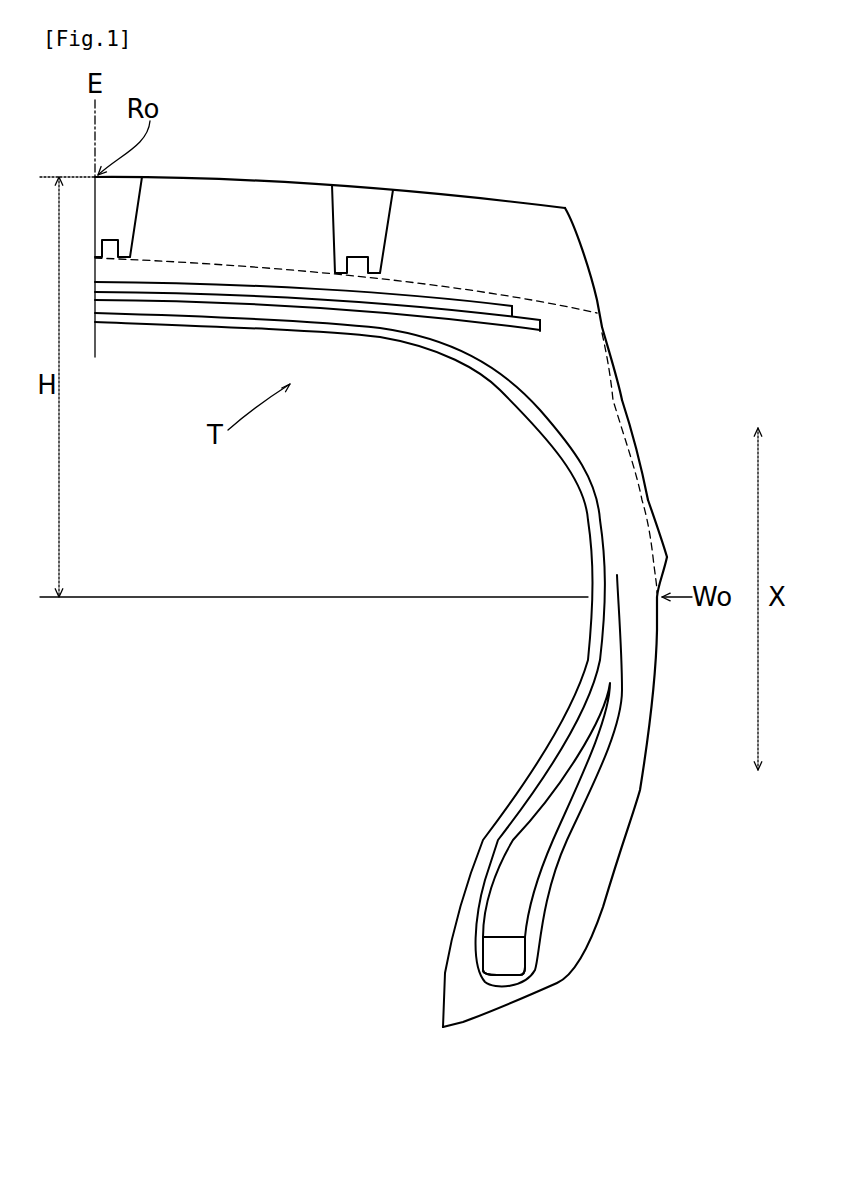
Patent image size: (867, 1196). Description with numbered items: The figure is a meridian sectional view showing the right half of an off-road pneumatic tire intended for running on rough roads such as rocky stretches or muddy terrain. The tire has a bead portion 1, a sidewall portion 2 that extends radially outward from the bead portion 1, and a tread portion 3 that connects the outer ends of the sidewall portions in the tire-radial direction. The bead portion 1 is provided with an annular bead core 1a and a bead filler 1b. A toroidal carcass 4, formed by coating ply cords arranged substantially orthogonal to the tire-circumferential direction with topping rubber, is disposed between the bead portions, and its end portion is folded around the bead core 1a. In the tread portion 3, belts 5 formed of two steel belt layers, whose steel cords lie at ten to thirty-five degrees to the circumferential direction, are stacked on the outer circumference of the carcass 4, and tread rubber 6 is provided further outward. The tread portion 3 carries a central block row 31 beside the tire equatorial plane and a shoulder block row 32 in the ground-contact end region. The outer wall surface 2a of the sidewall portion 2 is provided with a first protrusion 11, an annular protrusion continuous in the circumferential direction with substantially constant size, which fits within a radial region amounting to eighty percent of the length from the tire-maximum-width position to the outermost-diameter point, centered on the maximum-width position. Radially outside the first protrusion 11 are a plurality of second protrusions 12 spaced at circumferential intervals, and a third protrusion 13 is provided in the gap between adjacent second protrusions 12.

The bead portion 1 is at (608, 908).
The bead core 1a is at (500, 960).
The bead filler 1b is at (510, 878).
The sidewall portion 2 is at (652, 348).
The outer wall surface 2a is at (642, 498).
The tread portion 3 is at (260, 167).
The central block row 31 is at (215, 196).
The shoulder block row 32 is at (450, 206).
The carcass 4 is at (597, 656).
The belt 5 is at (365, 309).
The tread rubber 6 is at (528, 254).
The first protrusion 11 is at (662, 528).
The second protrusion 12 is at (637, 433).
The third protrusion 13 is at (618, 362).